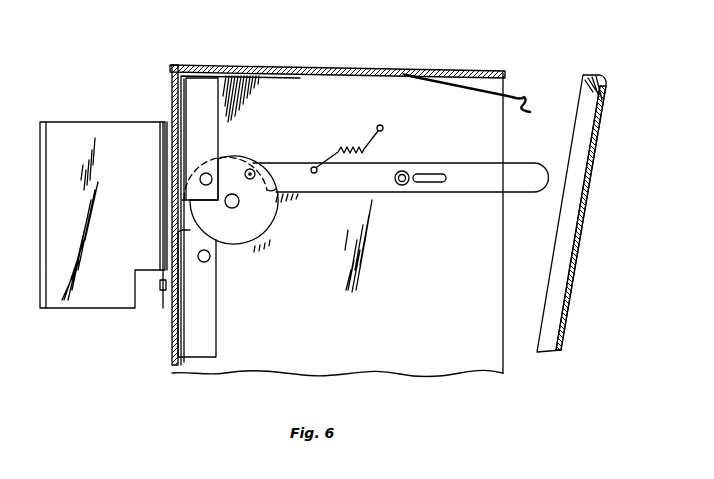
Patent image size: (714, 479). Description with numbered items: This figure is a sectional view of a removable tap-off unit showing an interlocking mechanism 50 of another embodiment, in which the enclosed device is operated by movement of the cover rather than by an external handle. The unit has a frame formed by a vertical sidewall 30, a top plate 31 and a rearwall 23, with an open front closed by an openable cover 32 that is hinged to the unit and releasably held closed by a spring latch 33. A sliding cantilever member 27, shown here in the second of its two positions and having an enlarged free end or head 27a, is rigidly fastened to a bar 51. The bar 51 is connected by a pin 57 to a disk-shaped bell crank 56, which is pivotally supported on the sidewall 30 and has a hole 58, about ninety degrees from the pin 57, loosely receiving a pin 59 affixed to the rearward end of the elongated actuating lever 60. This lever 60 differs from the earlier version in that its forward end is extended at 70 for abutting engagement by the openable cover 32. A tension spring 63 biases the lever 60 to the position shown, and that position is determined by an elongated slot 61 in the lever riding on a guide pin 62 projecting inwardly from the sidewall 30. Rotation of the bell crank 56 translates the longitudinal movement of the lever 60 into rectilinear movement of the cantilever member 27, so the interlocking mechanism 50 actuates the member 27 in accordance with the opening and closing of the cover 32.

The rearwall 23 is at (171, 93).
The cantilever member 27 is at (71, 122).
The enlarged free end 27a is at (120, 309).
The sidewall 30 is at (451, 372).
The top plate 31 is at (278, 65).
The openable cover 32 is at (586, 211).
The spring latch 33 is at (476, 100).
The interlocking mechanism 50 is at (304, 155).
The bar 51 is at (225, 246).
The bell crank 56 is at (236, 249).
The pin 57 is at (205, 173).
The hole 58 is at (256, 174).
The pin 59 is at (248, 169).
The lever 60 is at (340, 194).
The elongated slot 61 is at (418, 183).
The guide pin 62 is at (401, 171).
The tension spring 63 is at (340, 149).
The extended forward end 70 is at (540, 193).